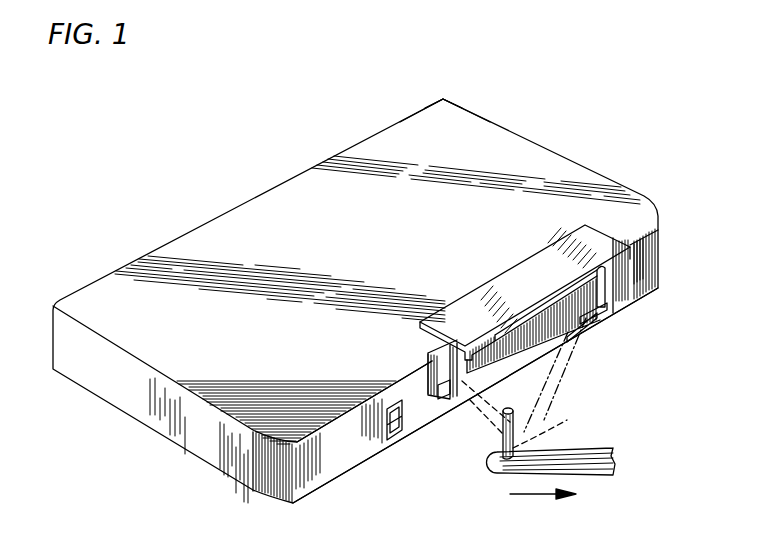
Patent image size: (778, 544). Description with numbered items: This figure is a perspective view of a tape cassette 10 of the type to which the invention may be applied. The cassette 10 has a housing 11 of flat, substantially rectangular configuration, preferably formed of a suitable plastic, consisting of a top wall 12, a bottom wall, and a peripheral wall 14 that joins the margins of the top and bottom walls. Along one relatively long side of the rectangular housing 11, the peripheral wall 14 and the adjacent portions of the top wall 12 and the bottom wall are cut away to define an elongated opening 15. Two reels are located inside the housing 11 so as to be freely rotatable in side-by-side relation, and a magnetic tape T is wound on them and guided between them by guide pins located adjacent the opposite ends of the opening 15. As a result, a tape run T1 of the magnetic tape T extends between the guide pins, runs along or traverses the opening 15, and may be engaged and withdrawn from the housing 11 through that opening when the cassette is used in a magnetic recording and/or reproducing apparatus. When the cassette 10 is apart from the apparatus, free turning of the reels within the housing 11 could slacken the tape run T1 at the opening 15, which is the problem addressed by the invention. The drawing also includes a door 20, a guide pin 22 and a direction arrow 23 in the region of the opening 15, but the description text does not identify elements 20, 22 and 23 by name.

The tape cassette 10 is at (545, 121).
The cassette housing 11 is at (488, 104).
The top wall 12 is at (443, 98).
The peripheral wall 14 is at (341, 462).
The opening 15 is at (475, 386).
The sliding door 20 is at (490, 283).
The guide pin 22 is at (500, 434).
The direction of insertion 23 is at (523, 497).
The magnetic tape T is at (524, 375).
The tape run T1 is at (548, 430).